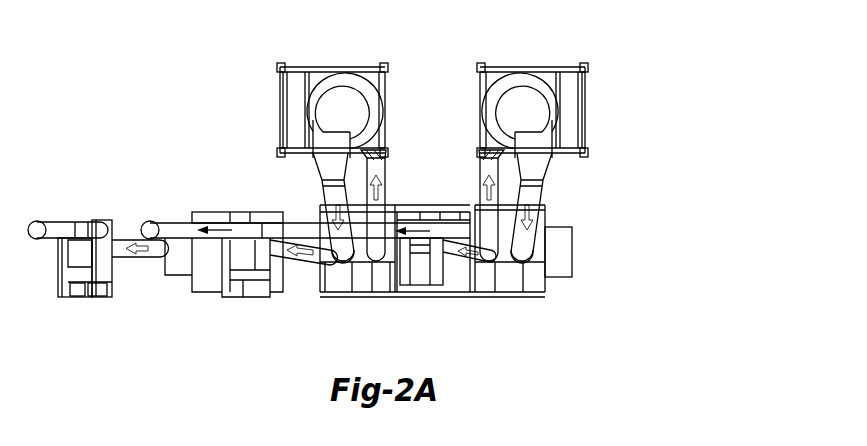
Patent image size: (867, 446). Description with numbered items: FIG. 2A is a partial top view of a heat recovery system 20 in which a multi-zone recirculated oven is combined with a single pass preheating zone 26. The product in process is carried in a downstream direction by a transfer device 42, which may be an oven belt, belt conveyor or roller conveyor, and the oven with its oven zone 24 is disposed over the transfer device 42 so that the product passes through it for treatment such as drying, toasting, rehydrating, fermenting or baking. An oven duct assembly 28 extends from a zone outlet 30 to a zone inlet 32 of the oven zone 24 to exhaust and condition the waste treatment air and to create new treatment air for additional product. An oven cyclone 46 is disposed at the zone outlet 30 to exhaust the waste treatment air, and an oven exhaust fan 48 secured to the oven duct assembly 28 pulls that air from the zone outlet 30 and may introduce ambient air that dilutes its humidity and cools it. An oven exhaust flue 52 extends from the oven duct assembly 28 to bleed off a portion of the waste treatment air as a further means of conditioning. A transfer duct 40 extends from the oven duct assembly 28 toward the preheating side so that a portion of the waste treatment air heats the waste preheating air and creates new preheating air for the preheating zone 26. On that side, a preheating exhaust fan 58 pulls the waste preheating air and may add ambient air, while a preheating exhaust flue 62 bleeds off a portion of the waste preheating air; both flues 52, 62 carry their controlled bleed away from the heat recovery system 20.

The heat recovery system 20 is at (670, 140).
The oven zone 24 is at (360, 278).
The preheating zone 26 is at (205, 280).
The oven duct assembly 28 is at (394, 167).
The zone outlet 30 is at (485, 262).
The zone inlet 32 is at (530, 254).
The transfer duct 40 is at (243, 225).
The transfer device 42 is at (556, 215).
The oven cyclone 46 is at (490, 80).
The oven exhaust fan 48 is at (331, 80).
The oven exhaust flue 52 is at (150, 221).
The preheating exhaust fan 58 is at (70, 288).
The preheating exhaust flue 62 is at (37, 221).